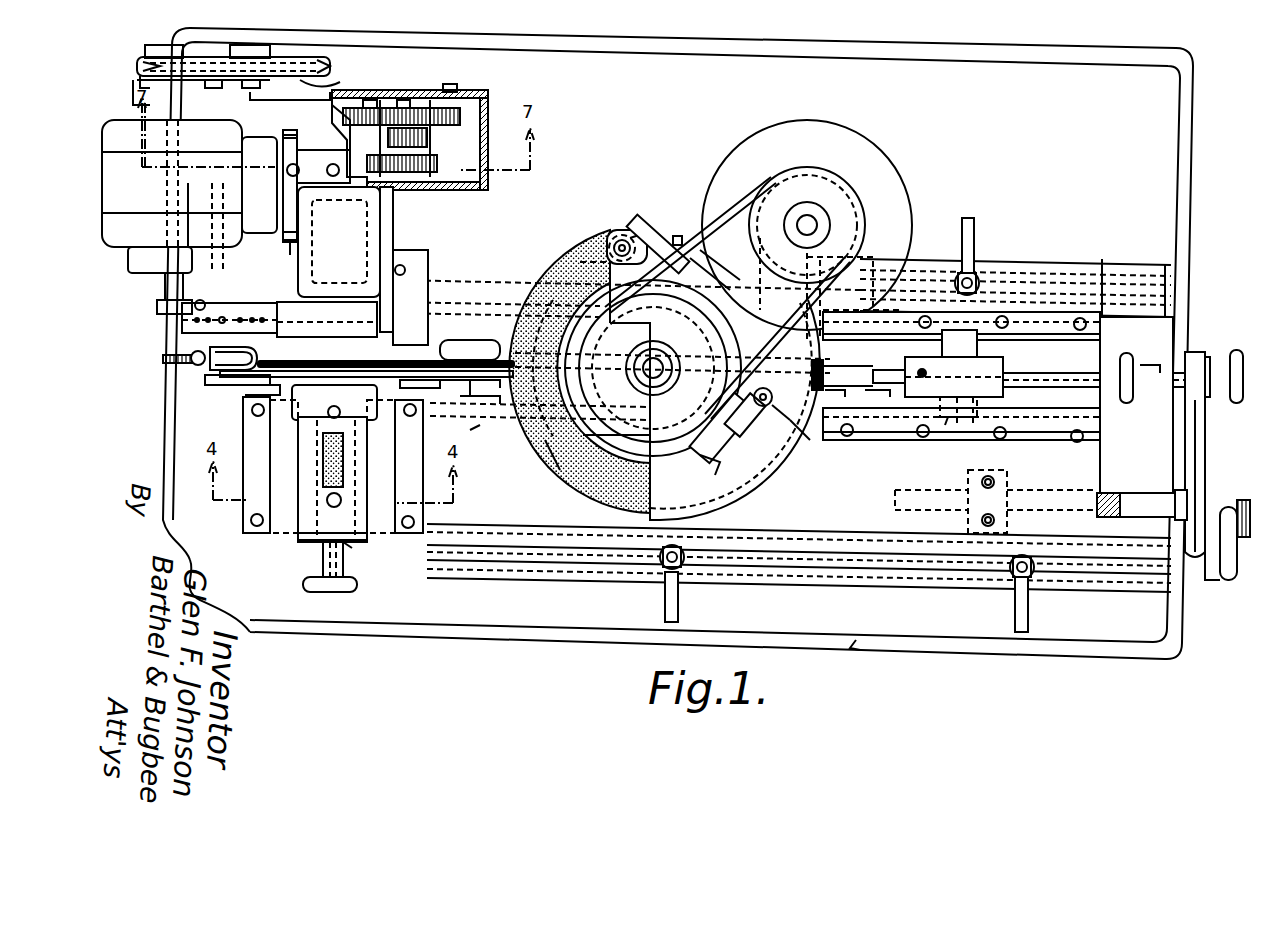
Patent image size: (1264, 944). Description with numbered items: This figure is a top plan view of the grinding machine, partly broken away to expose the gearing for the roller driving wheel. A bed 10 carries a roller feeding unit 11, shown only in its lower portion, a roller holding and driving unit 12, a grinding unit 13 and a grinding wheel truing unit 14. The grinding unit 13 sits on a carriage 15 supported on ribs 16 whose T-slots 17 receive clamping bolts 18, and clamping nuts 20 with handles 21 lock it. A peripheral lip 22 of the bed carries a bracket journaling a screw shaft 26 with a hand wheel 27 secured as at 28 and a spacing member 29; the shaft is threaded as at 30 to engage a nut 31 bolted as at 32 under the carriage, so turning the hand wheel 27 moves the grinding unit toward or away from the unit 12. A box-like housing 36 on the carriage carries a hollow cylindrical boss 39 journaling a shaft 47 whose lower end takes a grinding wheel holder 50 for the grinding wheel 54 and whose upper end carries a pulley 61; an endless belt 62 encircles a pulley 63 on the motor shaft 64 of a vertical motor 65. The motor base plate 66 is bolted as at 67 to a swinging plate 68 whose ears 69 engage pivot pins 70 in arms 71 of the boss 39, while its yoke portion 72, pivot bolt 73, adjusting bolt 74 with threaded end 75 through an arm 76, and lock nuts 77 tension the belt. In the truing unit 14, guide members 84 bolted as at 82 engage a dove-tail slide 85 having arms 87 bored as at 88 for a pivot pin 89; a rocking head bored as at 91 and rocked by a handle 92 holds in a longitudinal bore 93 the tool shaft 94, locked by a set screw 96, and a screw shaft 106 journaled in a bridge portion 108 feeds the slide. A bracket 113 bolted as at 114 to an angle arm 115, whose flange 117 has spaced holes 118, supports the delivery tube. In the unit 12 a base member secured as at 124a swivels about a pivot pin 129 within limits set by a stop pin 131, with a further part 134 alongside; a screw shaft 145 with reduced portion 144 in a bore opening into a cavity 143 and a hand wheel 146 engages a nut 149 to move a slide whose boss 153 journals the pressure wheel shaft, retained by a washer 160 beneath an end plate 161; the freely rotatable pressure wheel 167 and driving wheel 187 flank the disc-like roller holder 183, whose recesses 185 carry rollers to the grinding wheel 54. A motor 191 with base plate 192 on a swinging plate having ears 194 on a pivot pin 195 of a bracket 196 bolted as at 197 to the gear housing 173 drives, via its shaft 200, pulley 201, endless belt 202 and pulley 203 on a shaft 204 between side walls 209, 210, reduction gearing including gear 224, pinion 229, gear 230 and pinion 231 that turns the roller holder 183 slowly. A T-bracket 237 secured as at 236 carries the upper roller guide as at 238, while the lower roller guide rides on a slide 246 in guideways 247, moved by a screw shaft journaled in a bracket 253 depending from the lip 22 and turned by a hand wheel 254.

The bed 10 is at (861, 657).
The roller feeding unit 11 is at (184, 360).
The roller holding and driving unit 12 is at (232, 383).
The grinding unit 13 is at (545, 281).
The grinding wheel truing unit 14 is at (990, 360).
The carriage 15 is at (1058, 285).
The ribs 16 is at (1104, 268).
The T-slots 17 is at (1130, 290).
The clamping bolts 18 is at (960, 275).
The clamping nuts 20 is at (982, 278).
The handles 21 is at (975, 231).
The peripheral lip 22 is at (1032, 60).
The screw shaft 26 is at (1135, 495).
The hand wheel 27 is at (1217, 579).
The hand wheel securement 28 is at (1238, 540).
The spacing member 29 is at (1212, 432).
The threaded portion 30 is at (1106, 517).
The nut 31 is at (1005, 482).
The nut bolts 32 is at (1005, 520).
The box-like housing 36 is at (768, 476).
The hollow cylindrical boss 39 is at (705, 334).
The shaft 47 is at (653, 368).
The grinding wheel holder 50 is at (615, 420).
The grinding wheel 54 is at (562, 470).
The pulley 61 is at (653, 360).
The endless belt 62 is at (735, 210).
The pulley 63 is at (840, 192).
The motor shaft 64 is at (818, 223).
The vertical motor 65 is at (875, 163).
The base plate 66 is at (660, 216).
The base plate bolts 67 is at (682, 230).
The swinging plate 68 is at (648, 225).
The ears 69 is at (622, 240).
The pivot pins 70 is at (605, 240).
The arms 71 is at (568, 260).
The yoke portion 72 is at (800, 438).
The pivot bolt 73 is at (768, 418).
The adjusting bolt 74 is at (754, 400).
The threaded end 75 is at (695, 458).
The arm 76 is at (738, 456).
The lock nuts 77 is at (717, 462).
The guide member bolts 82 is at (1005, 320).
The bevelled elongated guide members 84 is at (1045, 330).
The dove-tail slide 85 is at (890, 365).
The upstanding arms 87 is at (948, 340).
The transverse bores 88 is at (935, 425).
The pivot pin 89 is at (960, 425).
The transverse bore 91 is at (920, 402).
The handle 92 is at (1148, 392).
The longitudinal bore 93 is at (835, 395).
The shaft 94 is at (877, 395).
The set screw 96 is at (920, 370).
The screw shaft 106 is at (1155, 357).
The bridge portion 108 is at (1126, 354).
The bracket 113 is at (190, 373).
The bolts 114 is at (222, 303).
The arm 115 is at (163, 292).
The flange 117 is at (158, 312).
The spaced holes 118 is at (248, 304).
The base member fastening 124a is at (252, 410).
The pivot pin 129 is at (320, 428).
The stop pin 131 is at (315, 488).
The side plate 134 is at (332, 466).
The cavity 143 is at (320, 440).
The reduced diameter portion 144 is at (323, 557).
The screw shaft 145 is at (345, 495).
The hand wheel 146 is at (358, 586).
The nut 149 is at (320, 455).
The boss 153 is at (365, 433).
The washer 160 is at (490, 390).
The end plate 161 is at (350, 545).
The pressure wheel 167 is at (449, 380).
The housing 173 is at (380, 215).
The roller holder 183 is at (297, 356).
The spaced recesses 185 is at (262, 387).
The driving wheel 187 is at (445, 352).
The motor 191 is at (118, 128).
The base plate 192 is at (262, 215).
The ears 194 is at (288, 134).
The pivot pin 195 is at (290, 244).
The bracket 196 is at (335, 140).
The bracket bolts 197 is at (300, 160).
The shaft 200 is at (140, 87).
The pulley 201 is at (140, 70).
The endless belt 202 is at (150, 58).
The pulley 203 is at (332, 76).
The shaft 204 is at (305, 95).
The side wall 209 is at (470, 190).
The side wall 210 is at (332, 280).
The gear 224 is at (438, 164).
The pinion 229 is at (370, 92).
The gear 230 is at (462, 112).
The pinion 231 is at (428, 136).
The T-bracket fastening 236 is at (400, 265).
The T-bracket 237 is at (377, 312).
The roller guide fastening 238 is at (422, 390).
The slide 246 is at (458, 397).
The guideways 247 is at (490, 280).
The bracket 253 is at (1198, 356).
The hand wheel 254 is at (1237, 350).